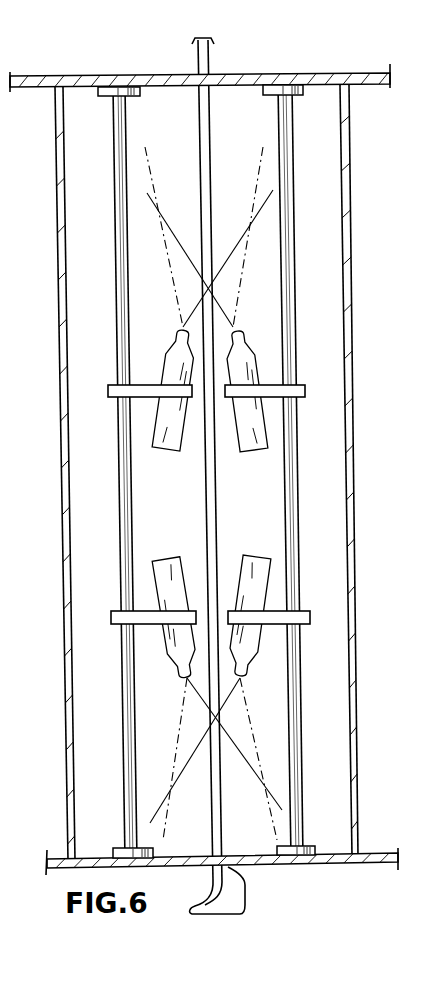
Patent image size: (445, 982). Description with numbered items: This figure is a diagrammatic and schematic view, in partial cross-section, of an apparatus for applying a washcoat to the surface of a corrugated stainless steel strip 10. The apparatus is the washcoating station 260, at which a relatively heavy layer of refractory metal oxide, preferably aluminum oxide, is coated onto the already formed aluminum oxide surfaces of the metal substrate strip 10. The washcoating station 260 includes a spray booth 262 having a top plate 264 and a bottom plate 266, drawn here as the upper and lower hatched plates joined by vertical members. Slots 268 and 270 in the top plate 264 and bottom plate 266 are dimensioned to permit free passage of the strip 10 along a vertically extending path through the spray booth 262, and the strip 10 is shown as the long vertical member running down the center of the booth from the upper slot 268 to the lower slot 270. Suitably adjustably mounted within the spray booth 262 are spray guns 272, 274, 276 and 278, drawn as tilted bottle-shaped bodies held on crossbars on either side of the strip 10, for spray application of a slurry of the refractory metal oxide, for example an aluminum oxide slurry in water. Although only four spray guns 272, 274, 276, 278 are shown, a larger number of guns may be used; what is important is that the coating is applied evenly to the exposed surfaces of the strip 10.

The strip 10 is at (210, 505).
The washcoating station 260 is at (366, 510).
The spray booth 262 is at (65, 600).
The top plate 264 is at (254, 78).
The bottom plate 266 is at (333, 862).
The slot 268 is at (208, 80).
The slot 270 is at (242, 877).
The spray gun 272 is at (166, 452).
The spray gun 274 is at (254, 452).
The spray gun 276 is at (168, 557).
The spray gun 278 is at (262, 557).